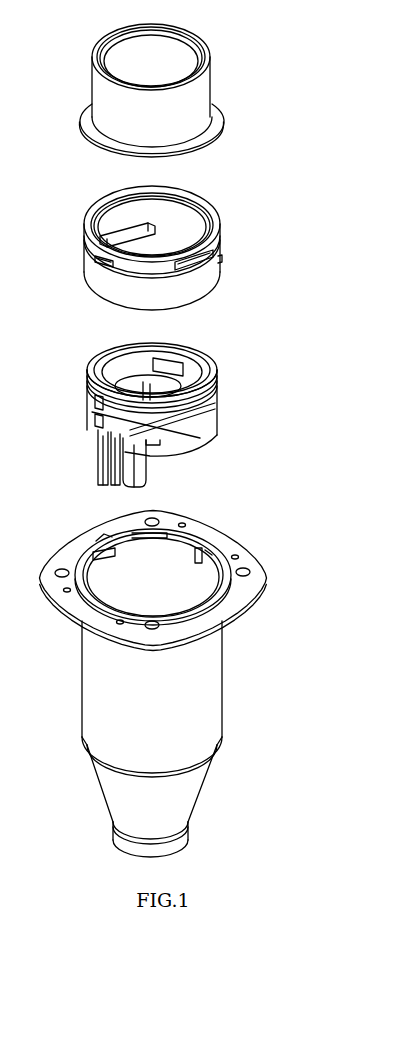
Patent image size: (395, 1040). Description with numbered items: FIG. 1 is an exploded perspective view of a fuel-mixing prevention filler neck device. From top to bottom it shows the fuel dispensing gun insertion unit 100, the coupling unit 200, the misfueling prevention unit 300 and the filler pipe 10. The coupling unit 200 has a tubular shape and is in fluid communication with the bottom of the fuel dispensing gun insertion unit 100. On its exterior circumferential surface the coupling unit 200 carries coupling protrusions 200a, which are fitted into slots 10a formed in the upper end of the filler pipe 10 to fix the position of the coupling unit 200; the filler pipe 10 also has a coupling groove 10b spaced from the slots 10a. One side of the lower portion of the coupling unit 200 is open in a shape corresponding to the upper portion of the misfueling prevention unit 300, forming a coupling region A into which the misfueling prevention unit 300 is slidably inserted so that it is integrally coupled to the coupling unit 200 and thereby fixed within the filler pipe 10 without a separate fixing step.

The filler pipe 10 is at (158, 676).
The slots 10a is at (103, 537).
The coupling groove 10b is at (203, 540).
The fuel dispensing gun insertion unit 100 is at (203, 83).
The coupling unit 200 is at (165, 243).
The coupling protrusions 200a is at (97, 263).
The coupling region A is at (217, 258).
The misfueling prevention unit 300 is at (217, 387).